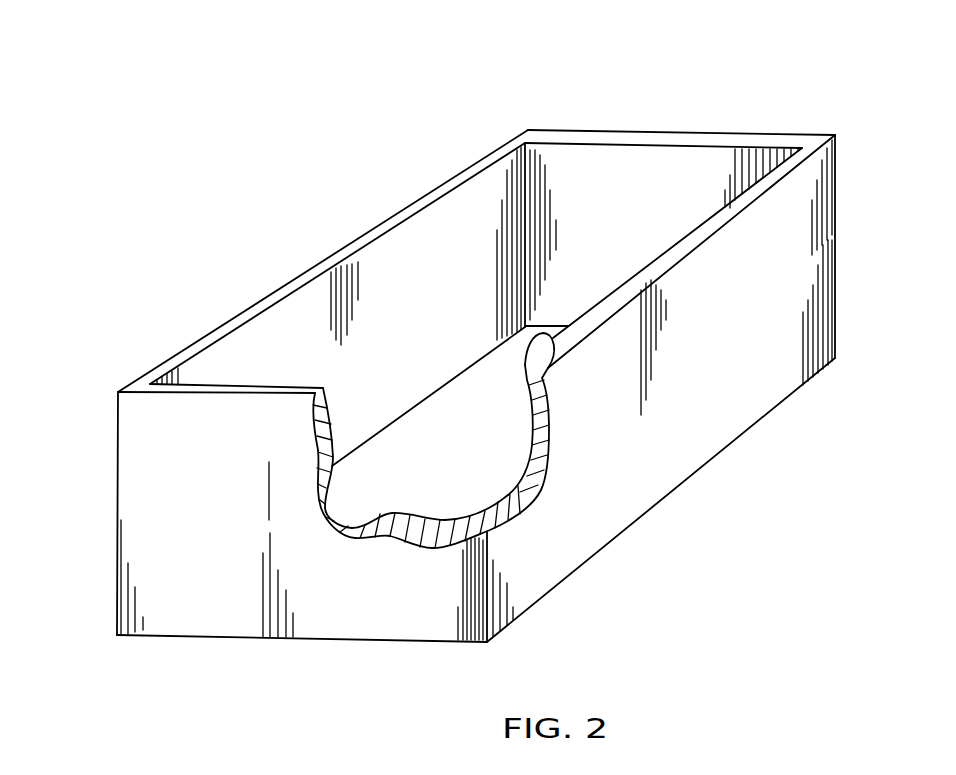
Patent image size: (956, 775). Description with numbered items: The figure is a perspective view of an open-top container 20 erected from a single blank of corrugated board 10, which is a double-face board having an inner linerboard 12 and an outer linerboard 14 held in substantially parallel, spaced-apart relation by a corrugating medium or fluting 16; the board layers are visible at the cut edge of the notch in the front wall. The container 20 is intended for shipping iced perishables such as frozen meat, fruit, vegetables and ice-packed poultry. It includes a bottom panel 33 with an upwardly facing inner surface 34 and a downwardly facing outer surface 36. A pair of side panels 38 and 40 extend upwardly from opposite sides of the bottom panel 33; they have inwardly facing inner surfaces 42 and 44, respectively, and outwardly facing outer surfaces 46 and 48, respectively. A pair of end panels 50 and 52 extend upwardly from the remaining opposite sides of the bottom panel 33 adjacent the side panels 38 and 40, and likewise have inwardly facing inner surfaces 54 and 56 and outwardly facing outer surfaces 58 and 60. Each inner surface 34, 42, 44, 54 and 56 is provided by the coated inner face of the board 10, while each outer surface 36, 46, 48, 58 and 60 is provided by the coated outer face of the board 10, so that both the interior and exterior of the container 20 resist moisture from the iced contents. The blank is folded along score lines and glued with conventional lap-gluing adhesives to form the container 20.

The corrugated board 10 is at (458, 389).
The inner linerboard 12 is at (564, 283).
The outer linerboard 14 is at (661, 388).
The corrugating medium 16 is at (471, 440).
The open-top container 20 is at (458, 372).
The bottom panel 33 is at (488, 468).
The inner surface of bottom panel 34 is at (388, 486).
The outer surface of bottom panel 36 is at (368, 643).
The side panel 38 is at (700, 437).
The side panel 40 is at (438, 299).
The inner surface of side panel 42 is at (556, 334).
The inner surface of side panel 44 is at (265, 364).
The outer surface of side panel 46 is at (788, 262).
The outer surface of side panel 48 is at (242, 306).
The end panel 50 is at (225, 518).
The end panel 52 is at (628, 204).
The inner surface of end panel 54 is at (333, 413).
The inner surface of end panel 56 is at (562, 160).
The outer surface of end panel 58 is at (135, 570).
The outer surface of end panel 60 is at (708, 132).